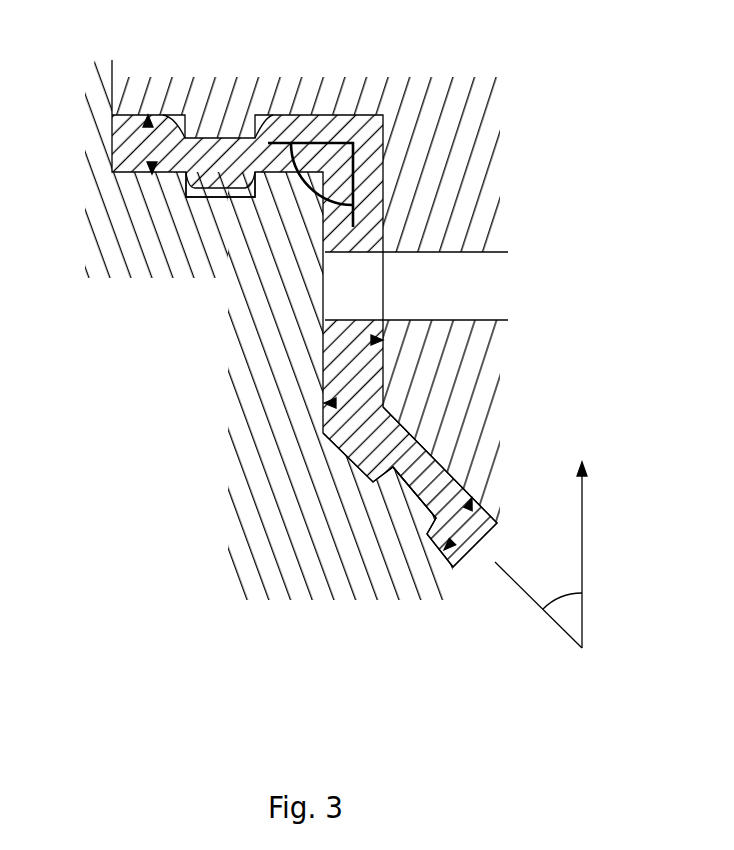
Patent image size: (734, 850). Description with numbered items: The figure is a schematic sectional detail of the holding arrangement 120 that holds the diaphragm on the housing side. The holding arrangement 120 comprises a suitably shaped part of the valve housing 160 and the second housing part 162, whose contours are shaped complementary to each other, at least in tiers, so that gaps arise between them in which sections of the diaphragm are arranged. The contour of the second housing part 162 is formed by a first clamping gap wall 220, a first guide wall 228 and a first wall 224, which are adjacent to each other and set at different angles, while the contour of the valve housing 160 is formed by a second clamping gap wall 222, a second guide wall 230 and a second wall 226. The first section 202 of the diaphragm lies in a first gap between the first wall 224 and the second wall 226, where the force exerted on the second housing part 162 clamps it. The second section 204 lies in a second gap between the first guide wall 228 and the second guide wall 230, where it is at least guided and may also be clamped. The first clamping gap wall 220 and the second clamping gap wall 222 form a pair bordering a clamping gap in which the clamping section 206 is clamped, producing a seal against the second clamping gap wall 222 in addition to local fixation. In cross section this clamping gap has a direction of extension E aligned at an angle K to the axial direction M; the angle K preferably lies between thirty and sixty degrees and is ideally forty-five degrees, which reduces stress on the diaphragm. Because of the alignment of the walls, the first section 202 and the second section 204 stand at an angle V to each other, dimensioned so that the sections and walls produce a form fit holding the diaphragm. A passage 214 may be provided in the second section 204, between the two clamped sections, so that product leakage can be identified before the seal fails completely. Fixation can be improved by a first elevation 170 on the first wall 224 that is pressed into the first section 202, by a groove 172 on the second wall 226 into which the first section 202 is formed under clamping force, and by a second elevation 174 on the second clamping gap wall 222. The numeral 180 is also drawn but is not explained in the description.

The holding arrangement 120 is at (560, 130).
The valve housing 160 is at (263, 482).
The second housing part 162 is at (458, 64).
The first elevation 170 is at (207, 127).
The groove 172 is at (203, 200).
The second elevation 174 is at (413, 507).
The coolant passage 180 is at (482, 302).
The first section 202 is at (173, 148).
The second section 204 is at (367, 358).
The clamping section 206 is at (357, 456).
The passage 214 is at (358, 293).
The first clamping gap wall 220 is at (470, 504).
The second clamping gap wall 222 is at (450, 545).
The first wall 224 is at (148, 120).
The second wall 226 is at (152, 168).
The first guide wall 228 is at (377, 339).
The second guide wall 230 is at (330, 403).
The angle V is at (320, 153).
The axial direction M is at (582, 543).
The angle K is at (573, 632).
The direction of extension E is at (530, 603).